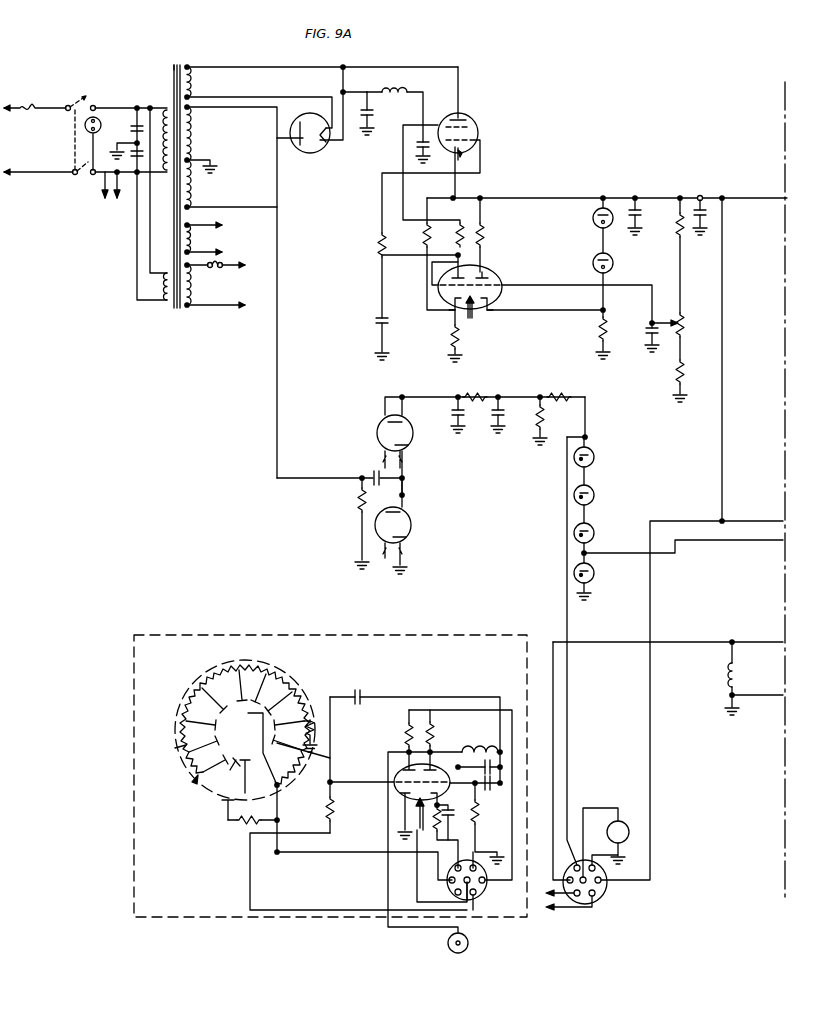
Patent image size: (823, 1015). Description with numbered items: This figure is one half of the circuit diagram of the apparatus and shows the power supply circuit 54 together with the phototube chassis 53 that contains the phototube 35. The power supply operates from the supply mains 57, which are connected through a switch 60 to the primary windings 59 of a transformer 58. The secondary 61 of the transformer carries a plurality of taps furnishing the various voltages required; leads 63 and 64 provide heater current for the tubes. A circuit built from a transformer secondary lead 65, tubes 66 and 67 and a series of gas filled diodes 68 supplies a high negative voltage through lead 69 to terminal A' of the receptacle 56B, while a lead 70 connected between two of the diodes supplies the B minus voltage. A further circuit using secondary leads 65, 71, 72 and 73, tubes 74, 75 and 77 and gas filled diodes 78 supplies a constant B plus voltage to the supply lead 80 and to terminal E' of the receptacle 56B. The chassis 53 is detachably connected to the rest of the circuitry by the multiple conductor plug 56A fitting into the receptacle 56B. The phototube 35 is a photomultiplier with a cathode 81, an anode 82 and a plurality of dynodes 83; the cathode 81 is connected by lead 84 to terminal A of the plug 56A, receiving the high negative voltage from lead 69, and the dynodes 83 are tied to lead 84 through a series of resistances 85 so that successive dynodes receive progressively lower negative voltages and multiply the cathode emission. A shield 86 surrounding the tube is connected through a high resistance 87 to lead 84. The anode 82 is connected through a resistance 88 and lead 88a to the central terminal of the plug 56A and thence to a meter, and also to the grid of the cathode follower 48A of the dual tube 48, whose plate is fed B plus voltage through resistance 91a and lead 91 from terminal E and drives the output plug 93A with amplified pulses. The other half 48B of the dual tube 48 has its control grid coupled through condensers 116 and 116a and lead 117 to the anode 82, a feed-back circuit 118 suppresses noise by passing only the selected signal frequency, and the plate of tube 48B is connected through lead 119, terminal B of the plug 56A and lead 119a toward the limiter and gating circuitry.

The phototube chassis 53 is at (302, 972).
The power supply circuit 54 is at (155, 414).
The supply mains 57 is at (30, 160).
The transformer 58 is at (170, 80).
The primary windings 59 is at (166, 173).
The switch 60 is at (84, 99).
The secondary 61 is at (190, 127).
The lead 63 is at (212, 288).
The lead 64 is at (217, 244).
The transformer secondary lead 65 is at (242, 206).
The tube 66 is at (412, 518).
The tube 67 is at (410, 445).
The gas filled diodes 68 is at (614, 485).
The lead 69 is at (575, 713).
The lead 70 is at (711, 546).
The transformer secondary lead 71 is at (237, 114).
The transformer secondary lead 72 is at (252, 72).
The transformer secondary lead 73 is at (283, 96).
The tube 74 is at (315, 154).
The tube 75 is at (472, 122).
The tube 77 is at (496, 268).
The gas filled diodes 78 is at (594, 256).
The supply lead 80 is at (575, 188).
The cathode 81 is at (240, 742).
The anode 82 is at (276, 752).
The dynodes 83 is at (236, 702).
The resistances 85 is at (200, 680).
The shield 86 is at (175, 748).
The phototube 35 is at (192, 782).
The high resistance 87 is at (240, 824).
The resistance 88 is at (328, 816).
The lead 88a is at (250, 878).
The lead 84 is at (342, 852).
The condenser 116a is at (350, 693).
The lead 117 is at (378, 697).
The lead 91 is at (447, 710).
The resistance 91a is at (404, 738).
The feed-back circuit 118 is at (472, 748).
The cathode follower 48A is at (392, 776).
The other half of the dual tube 48B is at (450, 758).
The dual tube 48 is at (392, 796).
The condenser 116 is at (484, 792).
The lead 119 is at (460, 836).
The lead 119a is at (694, 642).
The multiple conductor plug 56A is at (486, 910).
The receptacle 56B is at (608, 899).
The output plug 93A is at (466, 947).